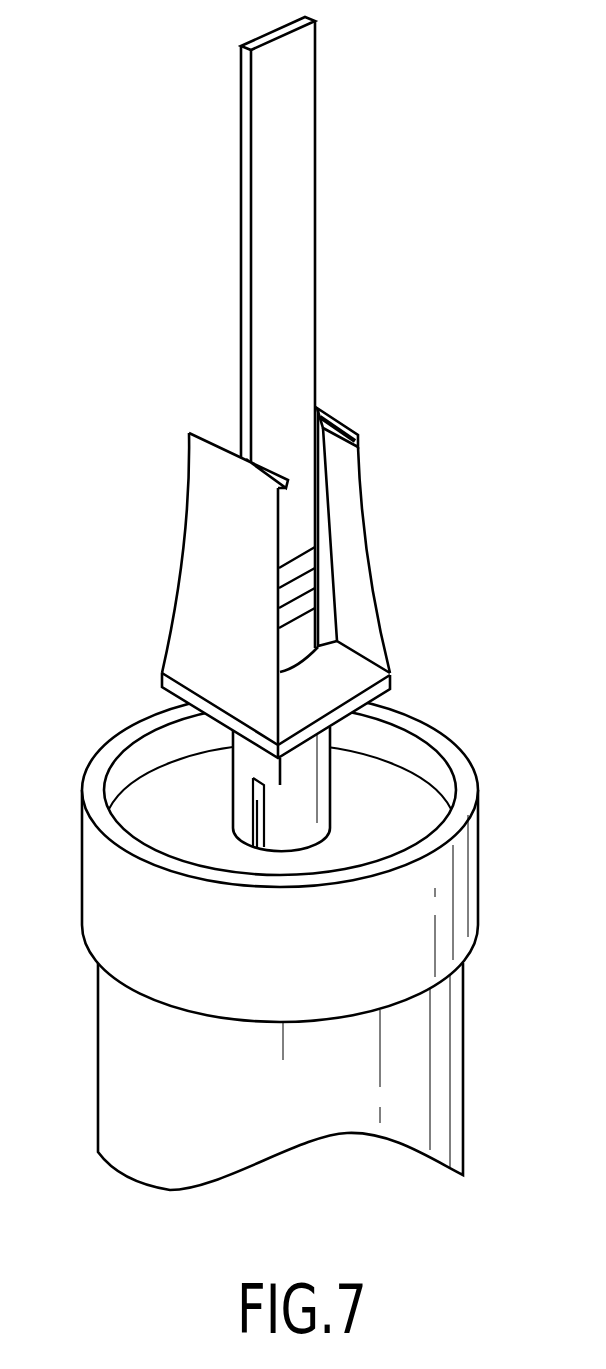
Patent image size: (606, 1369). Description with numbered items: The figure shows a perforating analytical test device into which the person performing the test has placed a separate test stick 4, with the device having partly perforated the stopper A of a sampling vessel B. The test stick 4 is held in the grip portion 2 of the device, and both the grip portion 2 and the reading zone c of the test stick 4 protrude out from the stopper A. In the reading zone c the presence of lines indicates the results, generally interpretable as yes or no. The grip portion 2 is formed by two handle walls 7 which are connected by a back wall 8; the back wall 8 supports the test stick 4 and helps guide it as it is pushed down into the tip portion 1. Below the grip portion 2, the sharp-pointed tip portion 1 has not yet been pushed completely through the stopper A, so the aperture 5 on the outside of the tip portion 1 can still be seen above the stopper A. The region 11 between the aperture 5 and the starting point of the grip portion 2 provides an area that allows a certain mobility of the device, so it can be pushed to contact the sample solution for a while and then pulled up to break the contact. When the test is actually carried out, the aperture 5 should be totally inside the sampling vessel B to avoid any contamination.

The test stick 4 is at (293, 223).
The grip portion 2 is at (362, 485).
The handle walls 7 is at (198, 580).
The reading zone c is at (308, 580).
The back wall 8 is at (325, 625).
The tip portion 1 is at (297, 785).
The region 11 is at (255, 762).
The aperture 5 is at (255, 817).
The stopper A is at (443, 890).
The sampling vessel B is at (440, 1082).